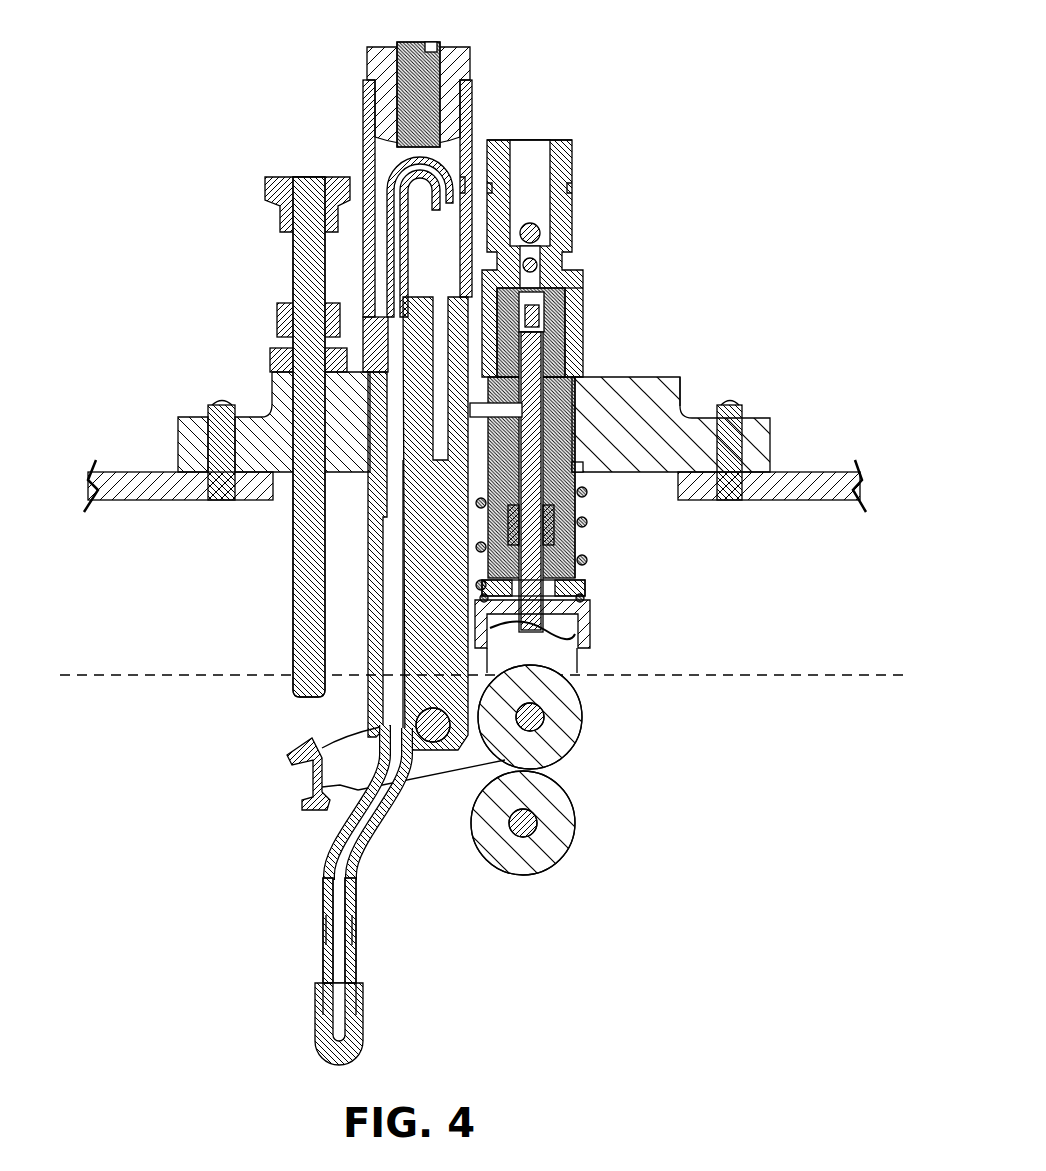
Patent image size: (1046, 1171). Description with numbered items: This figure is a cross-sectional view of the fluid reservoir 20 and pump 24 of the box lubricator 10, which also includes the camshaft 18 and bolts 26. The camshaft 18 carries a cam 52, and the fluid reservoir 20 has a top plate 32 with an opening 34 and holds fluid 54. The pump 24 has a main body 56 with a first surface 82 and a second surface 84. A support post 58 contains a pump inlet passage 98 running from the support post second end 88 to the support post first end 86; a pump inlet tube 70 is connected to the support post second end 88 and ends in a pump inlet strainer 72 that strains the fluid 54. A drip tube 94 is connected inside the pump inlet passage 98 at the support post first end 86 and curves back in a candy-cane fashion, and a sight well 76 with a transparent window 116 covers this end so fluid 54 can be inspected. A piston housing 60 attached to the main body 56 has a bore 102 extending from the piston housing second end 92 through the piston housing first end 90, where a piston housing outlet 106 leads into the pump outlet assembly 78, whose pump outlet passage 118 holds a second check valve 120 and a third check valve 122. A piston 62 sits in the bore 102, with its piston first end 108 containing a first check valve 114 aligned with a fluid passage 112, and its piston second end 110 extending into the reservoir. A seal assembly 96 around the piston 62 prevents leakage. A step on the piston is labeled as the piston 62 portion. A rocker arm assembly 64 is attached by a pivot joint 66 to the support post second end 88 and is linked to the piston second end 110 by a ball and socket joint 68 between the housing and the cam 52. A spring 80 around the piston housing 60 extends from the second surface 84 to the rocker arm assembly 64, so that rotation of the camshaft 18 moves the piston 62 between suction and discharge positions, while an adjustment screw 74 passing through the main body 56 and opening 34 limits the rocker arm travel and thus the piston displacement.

The box lubricator 10 is at (192, 64).
The camshaft 18 is at (535, 838).
The fluid reservoir 20 is at (179, 658).
The pump 24 is at (490, 116).
The bolts 26 is at (215, 402).
The top plate 32 is at (118, 478).
The opening 34 is at (278, 500).
The cam 52 is at (495, 855).
The fluid 54 is at (179, 718).
The main body 56 is at (625, 385).
The support post 58 is at (376, 572).
The piston housing 60 is at (582, 382).
The piston 62 is at (583, 471).
The rocker arm assembly 64 is at (459, 778).
The pivot joint 66 is at (440, 750).
The ball and socket joint 68 is at (540, 638).
The pump inlet tube 70 is at (355, 920).
The pump inlet strainer 72 is at (362, 1010).
The adjustment screw 74 is at (293, 275).
The sight well 76 is at (362, 180).
The pump outlet assembly 78 is at (568, 145).
The spring 80 is at (588, 575).
The first surface 82 is at (680, 382).
The second surface 84 is at (680, 500).
The support post first end 86 is at (362, 340).
The support post second end 88 is at (366, 724).
The piston housing first end 90 is at (556, 284).
The piston housing second end 92 is at (587, 588).
The drip tube 94 is at (372, 150).
The seal assembly 96 is at (583, 542).
The pump inlet passage 98 is at (392, 626).
The bore 102 is at (584, 503).
The piston housing outlet 106 is at (540, 262).
The piston first end 108 is at (548, 300).
The piston second end 110 is at (550, 622).
The fluid passage 112 is at (545, 345).
The first check valve 114 is at (544, 323).
The window 116 is at (470, 222).
The pump outlet passage 118 is at (528, 148).
The second check valve 120 is at (538, 240).
The third check valve 122 is at (540, 208).